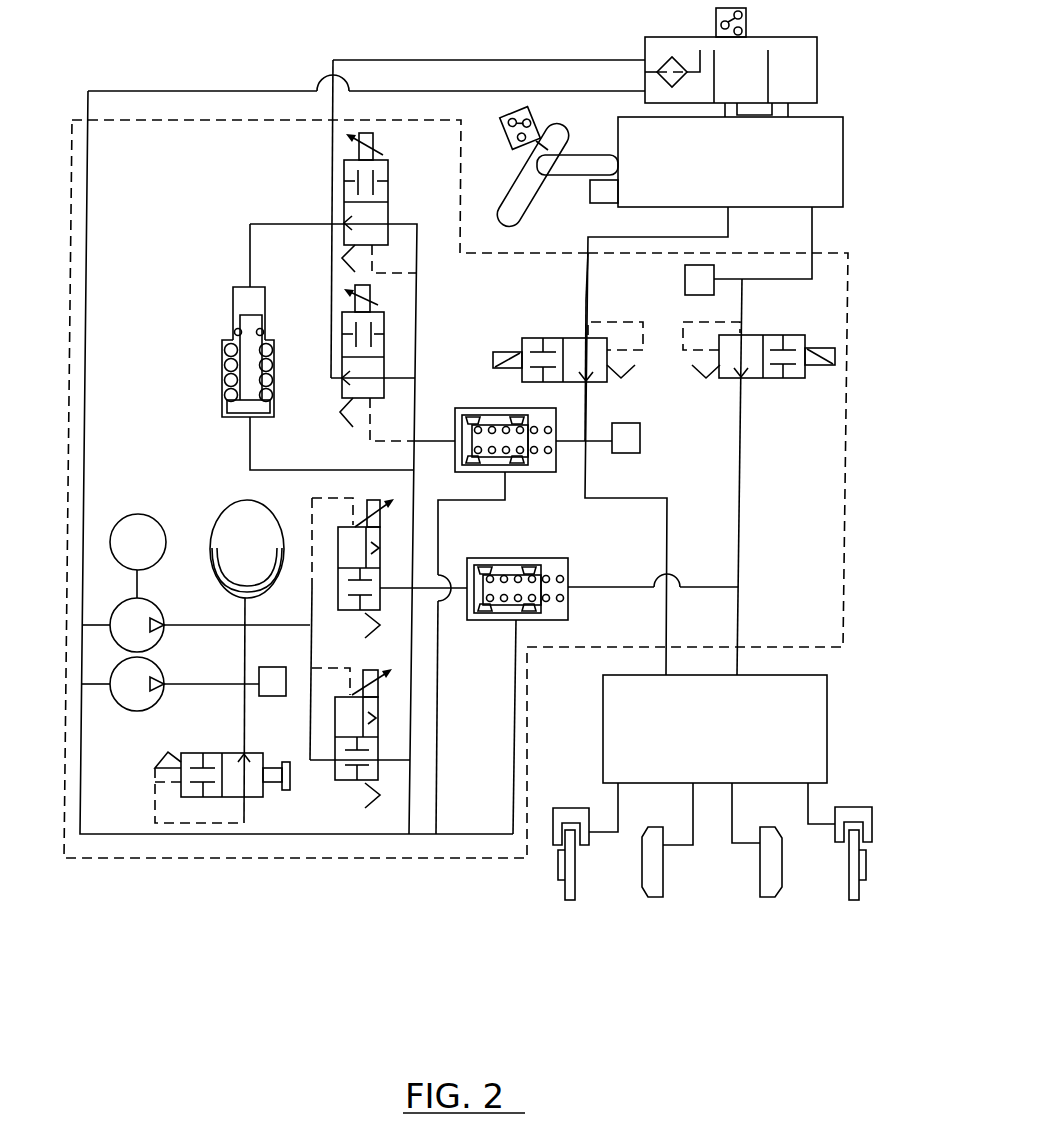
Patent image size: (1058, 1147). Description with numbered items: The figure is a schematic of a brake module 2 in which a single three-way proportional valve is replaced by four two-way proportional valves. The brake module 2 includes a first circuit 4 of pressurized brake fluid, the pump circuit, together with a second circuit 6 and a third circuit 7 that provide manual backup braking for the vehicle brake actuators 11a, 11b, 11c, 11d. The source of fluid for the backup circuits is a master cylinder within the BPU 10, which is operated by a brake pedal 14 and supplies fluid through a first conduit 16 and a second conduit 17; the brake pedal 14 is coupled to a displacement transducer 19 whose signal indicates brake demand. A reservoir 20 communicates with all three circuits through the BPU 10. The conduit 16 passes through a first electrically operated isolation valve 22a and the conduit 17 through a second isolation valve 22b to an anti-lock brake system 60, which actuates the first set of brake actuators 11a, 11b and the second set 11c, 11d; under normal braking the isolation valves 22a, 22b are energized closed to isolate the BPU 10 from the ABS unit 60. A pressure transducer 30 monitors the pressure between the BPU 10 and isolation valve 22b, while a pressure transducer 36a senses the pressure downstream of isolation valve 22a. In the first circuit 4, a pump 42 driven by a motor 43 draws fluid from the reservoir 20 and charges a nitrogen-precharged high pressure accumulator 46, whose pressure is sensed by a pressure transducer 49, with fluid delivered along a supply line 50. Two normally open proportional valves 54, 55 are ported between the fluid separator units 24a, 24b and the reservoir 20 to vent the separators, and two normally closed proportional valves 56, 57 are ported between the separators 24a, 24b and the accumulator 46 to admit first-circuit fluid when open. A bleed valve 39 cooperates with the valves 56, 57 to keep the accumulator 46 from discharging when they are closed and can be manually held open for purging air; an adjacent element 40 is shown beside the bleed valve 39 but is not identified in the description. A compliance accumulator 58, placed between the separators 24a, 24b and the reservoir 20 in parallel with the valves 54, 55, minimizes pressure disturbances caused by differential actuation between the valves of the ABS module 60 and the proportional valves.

The brake module 2 is at (368, 870).
The first circuit 4 is at (242, 849).
The second circuit 6 is at (596, 454).
The third circuit 7 is at (752, 580).
The BPU 10 is at (845, 167).
The vehicle brake actuator 11a is at (569, 905).
The vehicle brake actuator 11b is at (652, 902).
The vehicle brake actuator 11c is at (770, 902).
The vehicle brake actuator 11d is at (853, 905).
The brake pedal 14 is at (527, 176).
The first conduit 16 is at (585, 296).
The conduit 17 is at (812, 243).
The displacement transducer 19 is at (602, 204).
The reservoir 20 is at (820, 80).
The first electrically operated isolation valve 22a is at (540, 337).
The second electrically operated isolation valve 22b is at (800, 335).
The fluid separator unit 24a is at (478, 407).
The fluid separator unit 24b is at (548, 558).
The pressure transducer 30 is at (685, 284).
The pressure transducer 36a is at (640, 426).
The bleed valve 39 is at (218, 753).
The solenoid actuator 40 is at (290, 790).
The pump 42 is at (112, 610).
The motor 43 is at (112, 533).
The high pressure accumulator 46 is at (242, 500).
The pressure transducer 49 is at (274, 697).
The supply line 50 is at (270, 625).
The two-way normally open proportional valve 54 is at (344, 181).
The two-way normally open proportional valve 55 is at (342, 326).
The two-way normally closed proportional valve 56 is at (338, 540).
The two-way normally closed proportional valve 57 is at (336, 707).
The compliance accumulator 58 is at (222, 358).
The anti-lock brake system 60 is at (828, 720).